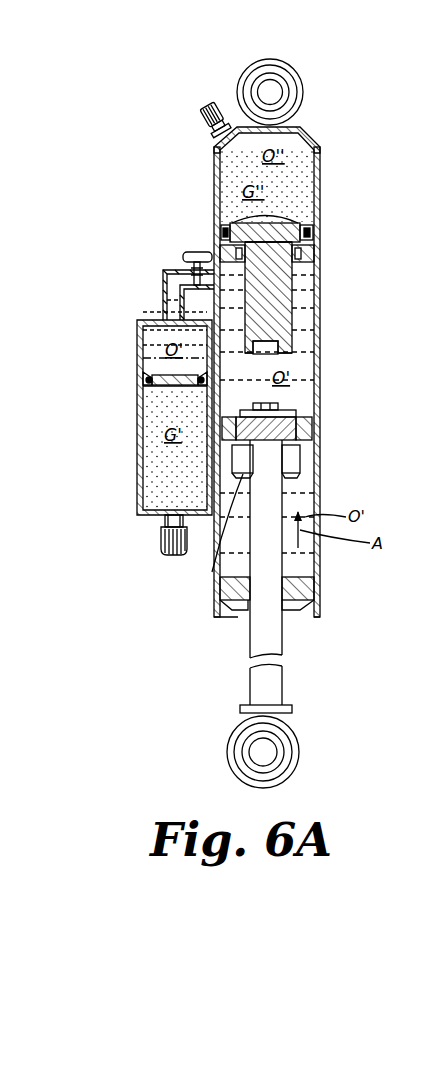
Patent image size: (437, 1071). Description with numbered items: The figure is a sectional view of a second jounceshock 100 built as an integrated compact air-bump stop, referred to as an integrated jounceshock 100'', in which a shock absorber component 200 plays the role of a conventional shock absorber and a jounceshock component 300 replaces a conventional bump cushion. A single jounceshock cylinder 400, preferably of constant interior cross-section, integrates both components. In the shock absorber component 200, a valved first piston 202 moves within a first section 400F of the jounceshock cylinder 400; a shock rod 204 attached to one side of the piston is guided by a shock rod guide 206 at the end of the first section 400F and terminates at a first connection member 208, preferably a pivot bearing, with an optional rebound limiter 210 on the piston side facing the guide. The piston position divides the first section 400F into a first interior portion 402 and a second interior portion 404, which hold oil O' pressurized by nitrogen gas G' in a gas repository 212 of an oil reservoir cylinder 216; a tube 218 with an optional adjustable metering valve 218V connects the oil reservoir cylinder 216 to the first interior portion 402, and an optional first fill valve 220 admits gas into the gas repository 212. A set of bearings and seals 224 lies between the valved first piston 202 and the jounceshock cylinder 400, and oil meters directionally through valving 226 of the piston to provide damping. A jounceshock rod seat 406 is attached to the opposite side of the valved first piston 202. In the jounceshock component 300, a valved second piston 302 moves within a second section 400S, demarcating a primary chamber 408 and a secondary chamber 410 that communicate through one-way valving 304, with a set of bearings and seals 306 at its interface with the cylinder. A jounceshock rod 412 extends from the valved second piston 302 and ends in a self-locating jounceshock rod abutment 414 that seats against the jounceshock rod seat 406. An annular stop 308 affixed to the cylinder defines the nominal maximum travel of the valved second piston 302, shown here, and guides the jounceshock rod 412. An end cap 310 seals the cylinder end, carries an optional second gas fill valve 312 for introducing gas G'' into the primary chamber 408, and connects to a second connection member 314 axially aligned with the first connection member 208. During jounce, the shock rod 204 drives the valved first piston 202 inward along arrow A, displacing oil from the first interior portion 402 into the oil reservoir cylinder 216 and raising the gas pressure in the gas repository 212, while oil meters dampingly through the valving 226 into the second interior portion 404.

The second jounceshock 100 is at (394, 144).
The integrated jounceshock 100'' is at (383, 239).
The shock absorber component 200 is at (198, 602).
The valved first piston 202 is at (277, 430).
The shock rod 204 is at (283, 652).
The shock rod guide 206 is at (292, 615).
The first connection member 208 is at (300, 752).
The rebound limiter 210 is at (215, 562).
The gas repository 212 is at (137, 480).
The oil reservoir cylinder 216 is at (138, 345).
The tube 218 is at (163, 300).
The adjustable metering valve 218V is at (183, 262).
The first fill valve 220 is at (168, 556).
The set of bearings and seals 224 is at (312, 432).
The valving 226 is at (310, 420).
The jounceshock component 300 is at (217, 356).
The valved second piston 302 is at (322, 152).
The valving 304 is at (241, 209).
The set of bearings and seals 306 is at (210, 229).
The annular stop 308 is at (318, 266).
The end cap 310 is at (308, 130).
The second gas fill valve 312 is at (232, 120).
The second connection member 314 is at (302, 81).
The jounceshock cylinder 400 is at (322, 493).
The first section 400F is at (322, 478).
The second section 400S is at (210, 183).
The first interior portion 402 is at (308, 367).
The second interior portion 404 is at (305, 561).
The jounceshock rod seat 406 is at (150, 389).
The primary chamber 408 is at (212, 140).
The secondary chamber 410 is at (312, 236).
The jounceshock rod 412 is at (300, 284).
The jounceshock rod abutment 414 is at (305, 352).